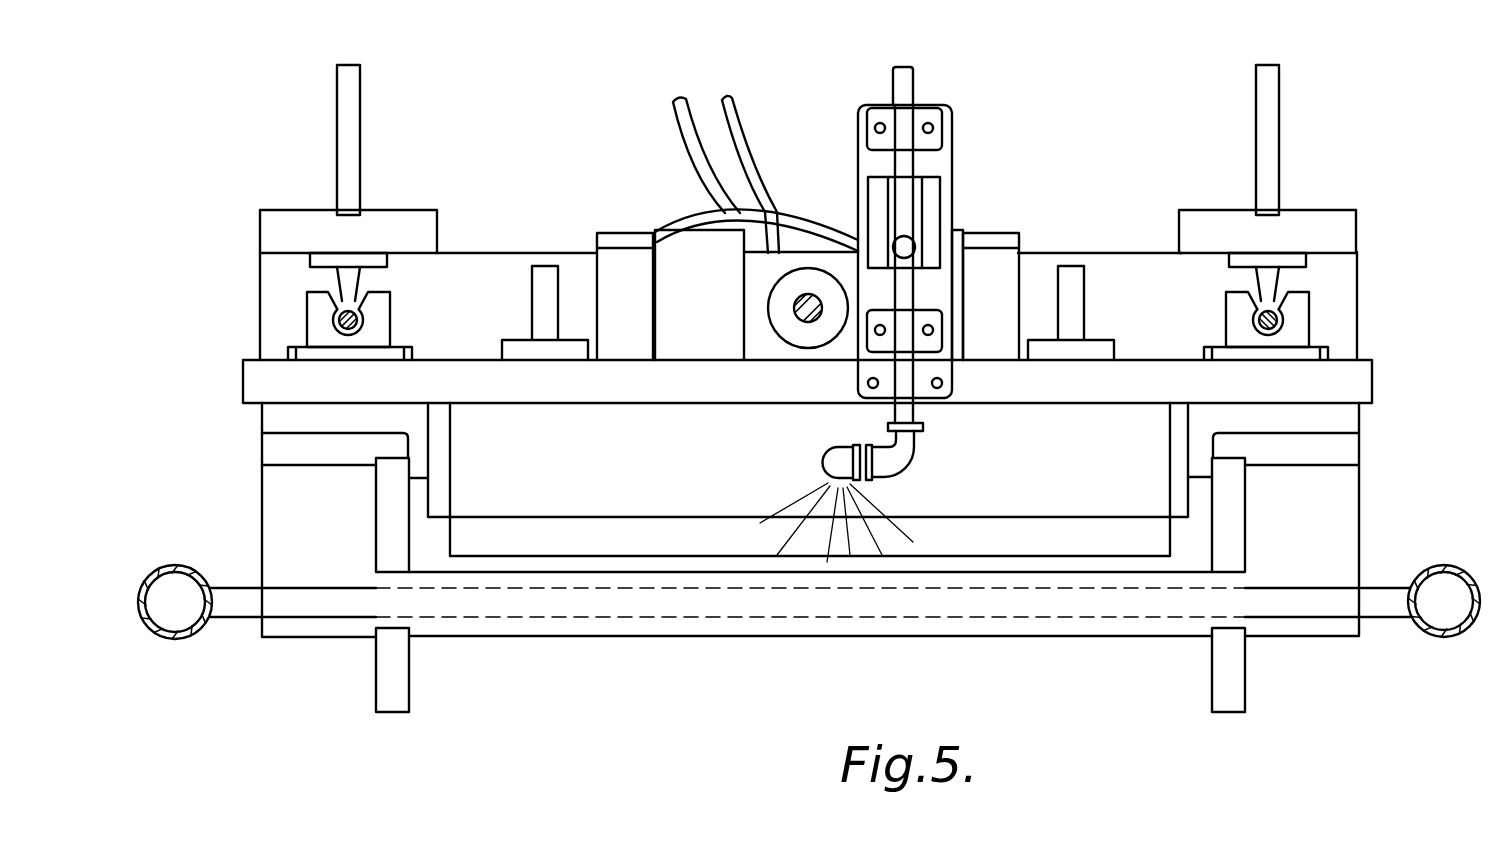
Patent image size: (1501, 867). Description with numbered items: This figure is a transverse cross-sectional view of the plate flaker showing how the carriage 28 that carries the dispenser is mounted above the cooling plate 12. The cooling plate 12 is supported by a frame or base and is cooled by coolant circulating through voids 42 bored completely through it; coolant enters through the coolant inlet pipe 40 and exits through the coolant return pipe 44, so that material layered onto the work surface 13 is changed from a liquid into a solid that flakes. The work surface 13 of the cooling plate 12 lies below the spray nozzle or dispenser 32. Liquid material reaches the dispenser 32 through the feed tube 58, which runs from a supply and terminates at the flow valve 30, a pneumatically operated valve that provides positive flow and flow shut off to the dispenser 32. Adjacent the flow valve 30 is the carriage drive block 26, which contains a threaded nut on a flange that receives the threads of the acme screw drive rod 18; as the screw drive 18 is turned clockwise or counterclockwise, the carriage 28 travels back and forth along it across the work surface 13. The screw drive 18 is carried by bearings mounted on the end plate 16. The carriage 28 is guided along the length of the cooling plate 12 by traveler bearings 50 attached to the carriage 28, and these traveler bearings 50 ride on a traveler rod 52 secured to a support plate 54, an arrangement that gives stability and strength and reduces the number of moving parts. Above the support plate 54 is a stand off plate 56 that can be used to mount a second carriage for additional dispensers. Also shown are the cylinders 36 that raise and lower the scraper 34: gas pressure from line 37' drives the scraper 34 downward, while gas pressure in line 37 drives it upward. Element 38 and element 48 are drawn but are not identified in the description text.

The cooling plate 12 is at (560, 625).
The work surface 13 is at (573, 572).
The end plate 16 is at (280, 500).
The screw drive 18 is at (800, 297).
The carriage drive block 26 is at (812, 280).
The carriage 28 is at (300, 392).
The flow valve 30 is at (930, 207).
The spray nozzle or dispenser 32 is at (830, 462).
The scraper 34 is at (1147, 557).
The cylinder 36 is at (625, 268).
The gas line 37 is at (764, 152).
The gas line 37' is at (669, 147).
The guide pin 38 is at (550, 280).
The coolant inlet pipe 40 is at (173, 568).
The voids 42 is at (677, 612).
The coolant return pipe 44 is at (1440, 638).
The bracket 48 is at (287, 450).
The traveler bearings 50 is at (318, 335).
The traveler rod 52 is at (320, 263).
The support plate 54 is at (310, 237).
The stand off plate 56 is at (347, 82).
The feed tube 58 is at (900, 90).